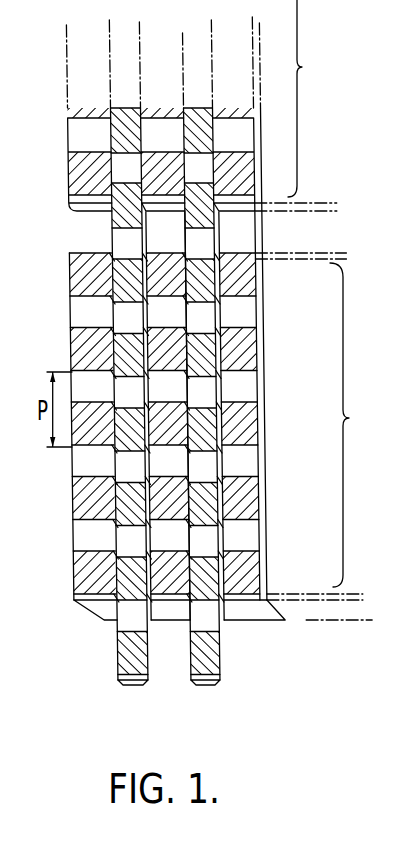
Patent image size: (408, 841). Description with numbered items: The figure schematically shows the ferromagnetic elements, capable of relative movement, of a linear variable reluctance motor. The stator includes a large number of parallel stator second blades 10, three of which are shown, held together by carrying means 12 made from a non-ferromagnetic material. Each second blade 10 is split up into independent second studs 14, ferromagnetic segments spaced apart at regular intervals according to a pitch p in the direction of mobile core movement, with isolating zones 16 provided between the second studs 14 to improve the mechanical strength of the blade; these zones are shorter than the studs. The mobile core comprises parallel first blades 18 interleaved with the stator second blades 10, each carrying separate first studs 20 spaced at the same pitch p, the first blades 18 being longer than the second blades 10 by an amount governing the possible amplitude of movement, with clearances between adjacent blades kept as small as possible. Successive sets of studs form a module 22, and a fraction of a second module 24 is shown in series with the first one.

The second blades 10 is at (222, 600).
The carrying means 12 is at (257, 612).
The second studs 14 is at (90, 172).
The isolating zones 16 is at (250, 533).
The first blades 18 is at (205, 685).
The first studs 20 is at (203, 353).
The module 22 is at (321, 420).
The second module 24 is at (201, 105).